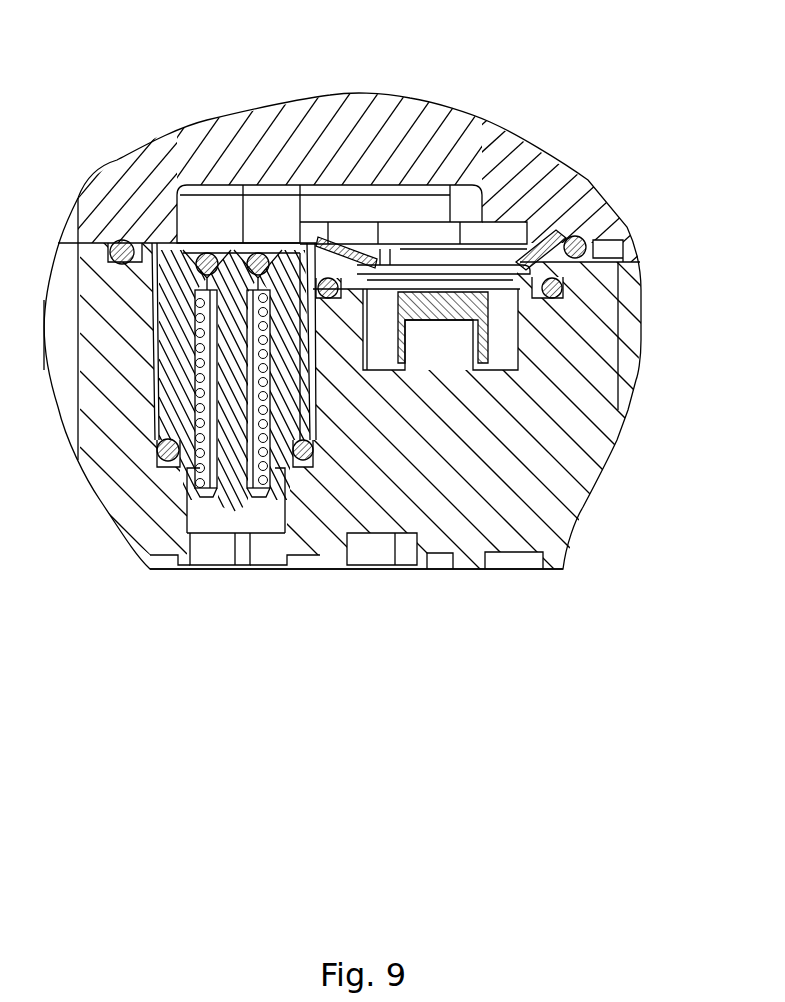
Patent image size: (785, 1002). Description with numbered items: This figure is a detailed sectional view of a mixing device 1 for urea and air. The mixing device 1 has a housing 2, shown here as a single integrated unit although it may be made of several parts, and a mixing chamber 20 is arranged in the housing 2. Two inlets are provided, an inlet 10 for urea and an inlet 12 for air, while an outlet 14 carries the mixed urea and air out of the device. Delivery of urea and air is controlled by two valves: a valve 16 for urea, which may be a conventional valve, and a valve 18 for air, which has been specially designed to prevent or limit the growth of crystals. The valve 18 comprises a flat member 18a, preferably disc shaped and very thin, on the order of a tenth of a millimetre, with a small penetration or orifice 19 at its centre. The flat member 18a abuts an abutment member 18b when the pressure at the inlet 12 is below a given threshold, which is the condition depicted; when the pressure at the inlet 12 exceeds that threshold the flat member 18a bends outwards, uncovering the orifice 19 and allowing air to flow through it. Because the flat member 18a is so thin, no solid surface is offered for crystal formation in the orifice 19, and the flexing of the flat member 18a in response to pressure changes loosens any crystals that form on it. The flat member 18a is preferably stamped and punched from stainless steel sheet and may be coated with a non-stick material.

The mixing device 1 is at (100, 112).
The housing 2 is at (290, 108).
The mixing chamber 20 is at (210, 207).
The outlet 14 is at (460, 203).
The orifice 19 is at (440, 280).
The flat member 18a is at (566, 236).
The abutment member 18b is at (490, 307).
The valve 18 is at (507, 347).
The inlet 12 is at (505, 360).
The valve 16 is at (173, 400).
The inlet 10 is at (245, 552).